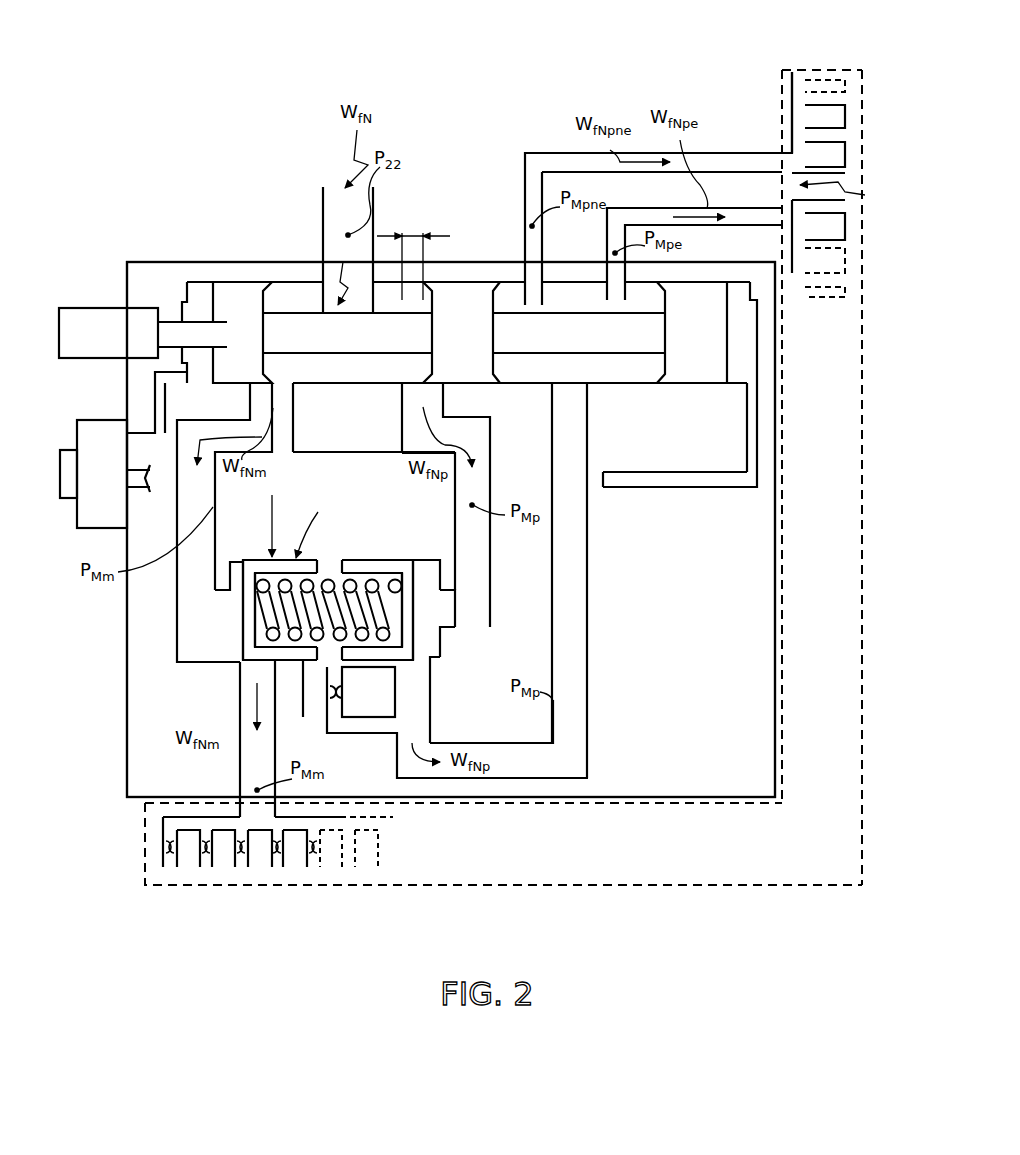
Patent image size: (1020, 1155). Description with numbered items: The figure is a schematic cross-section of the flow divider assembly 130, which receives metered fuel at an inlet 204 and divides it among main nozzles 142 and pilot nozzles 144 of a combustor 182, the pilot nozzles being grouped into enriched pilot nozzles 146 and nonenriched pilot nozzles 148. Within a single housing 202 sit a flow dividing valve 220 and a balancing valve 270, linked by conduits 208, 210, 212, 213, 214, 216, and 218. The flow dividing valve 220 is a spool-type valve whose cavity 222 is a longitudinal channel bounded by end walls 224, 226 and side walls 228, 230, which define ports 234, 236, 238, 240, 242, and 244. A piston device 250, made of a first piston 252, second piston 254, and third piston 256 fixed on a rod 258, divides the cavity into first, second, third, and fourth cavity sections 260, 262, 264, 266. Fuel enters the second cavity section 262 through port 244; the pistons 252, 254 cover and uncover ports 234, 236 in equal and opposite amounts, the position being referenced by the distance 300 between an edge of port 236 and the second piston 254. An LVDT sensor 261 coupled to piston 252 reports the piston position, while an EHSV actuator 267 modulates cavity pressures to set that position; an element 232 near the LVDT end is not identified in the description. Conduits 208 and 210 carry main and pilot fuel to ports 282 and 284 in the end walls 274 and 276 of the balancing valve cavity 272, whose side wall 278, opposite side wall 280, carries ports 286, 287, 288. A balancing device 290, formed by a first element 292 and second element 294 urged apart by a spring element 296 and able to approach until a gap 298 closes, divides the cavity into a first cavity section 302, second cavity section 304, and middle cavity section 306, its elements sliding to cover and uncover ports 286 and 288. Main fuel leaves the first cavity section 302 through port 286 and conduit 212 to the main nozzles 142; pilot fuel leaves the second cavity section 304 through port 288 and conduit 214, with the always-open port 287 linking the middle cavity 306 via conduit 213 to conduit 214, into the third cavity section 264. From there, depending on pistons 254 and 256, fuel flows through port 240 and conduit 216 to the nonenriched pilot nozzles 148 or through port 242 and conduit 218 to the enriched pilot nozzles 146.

The flow divider assembly 130 is at (183, 98).
The main nozzles 142 is at (160, 835).
The pilot nozzles 144 is at (848, 190).
The enriched pilot nozzles 146 is at (845, 300).
The nonenriched pilot nozzles 148 is at (790, 125).
The combustor 182 is at (798, 70).
The housing 202 is at (148, 262).
The inlet 204 is at (323, 192).
The conduit 208 is at (195, 533).
The conduit 210 is at (491, 467).
The conduit 212 is at (330, 665).
The conduit 213 is at (350, 728).
The conduit 214 is at (431, 721).
The conduit 216 is at (535, 153).
The conduit 218 is at (728, 208).
The flow dividing valve 220 is at (200, 282).
The cavity 222 is at (295, 295).
The end wall 224 is at (185, 300).
The end wall 226 is at (757, 305).
The side wall 228 is at (413, 282).
The side wall 230 is at (326, 383).
The spool end cap 232 is at (202, 280).
The port 234 is at (250, 394).
The port 236 is at (417, 392).
The port 238 is at (562, 424).
The port 240 is at (532, 290).
The port 242 is at (579, 333).
The port 244 is at (323, 234).
The piston device 250 is at (345, 271).
The first piston 252 is at (262, 362).
The second piston 254 is at (483, 375).
The third piston 256 is at (662, 380).
The rod 258 is at (588, 384).
The first cavity section 260 is at (160, 372).
The sensor 261 is at (118, 308).
The second cavity section 262 is at (372, 383).
The third cavity section 264 is at (652, 385).
The fourth cavity section 266 is at (742, 385).
The actuator 267 is at (118, 420).
The balancing valve 270 is at (285, 514).
The longitudinal cavity 272 is at (435, 646).
The end wall 274 is at (232, 660).
The end wall 276 is at (432, 591).
The side wall 278 is at (368, 692).
The side wall 280 is at (372, 580).
The port 282 is at (243, 600).
The port 284 is at (441, 622).
The port 286 is at (240, 695).
The port 287 is at (328, 699).
The port 288 is at (423, 664).
The balancing device 290 is at (322, 523).
The first element 292 is at (245, 560).
The second element 294 is at (408, 560).
The spring element 296 is at (243, 628).
The gap 298 is at (328, 579).
The distance 300 is at (403, 236).
The first cavity section 302 is at (232, 578).
The second cavity section 304 is at (428, 580).
The third, middle cavity section 306 is at (348, 573).